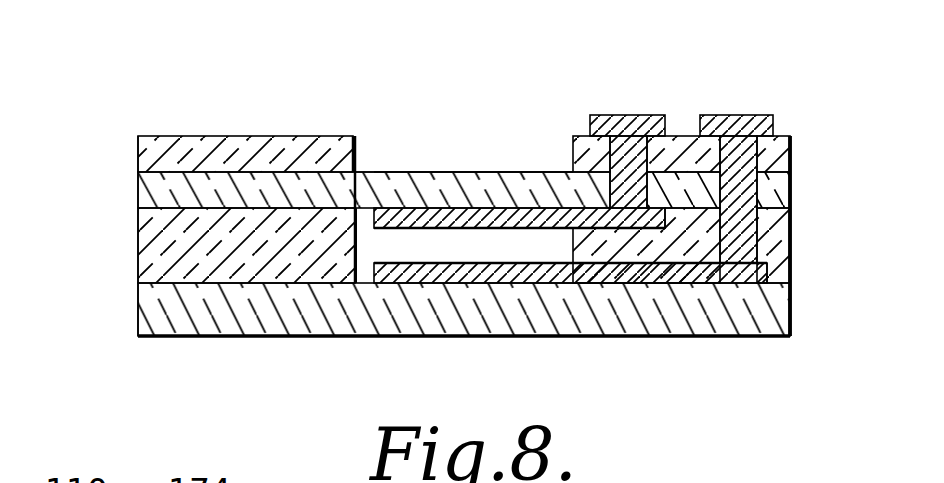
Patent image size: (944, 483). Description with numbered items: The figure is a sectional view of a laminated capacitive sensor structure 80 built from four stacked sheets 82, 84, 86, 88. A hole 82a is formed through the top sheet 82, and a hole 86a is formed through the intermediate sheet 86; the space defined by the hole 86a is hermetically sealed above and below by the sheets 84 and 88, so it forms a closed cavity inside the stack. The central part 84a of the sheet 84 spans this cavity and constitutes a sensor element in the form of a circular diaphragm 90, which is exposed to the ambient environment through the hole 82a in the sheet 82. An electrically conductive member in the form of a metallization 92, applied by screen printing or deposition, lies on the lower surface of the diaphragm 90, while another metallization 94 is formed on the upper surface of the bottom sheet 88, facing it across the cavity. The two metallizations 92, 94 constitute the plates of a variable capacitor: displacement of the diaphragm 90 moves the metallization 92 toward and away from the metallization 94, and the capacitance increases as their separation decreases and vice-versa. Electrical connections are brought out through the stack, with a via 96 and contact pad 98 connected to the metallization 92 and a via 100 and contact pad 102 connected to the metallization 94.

The structure 80 is at (133, 112).
The sheet 82 is at (138, 157).
The hole 82a is at (360, 146).
The sheet 84 is at (138, 187).
The central part 84a is at (394, 163).
The sheet 86 is at (138, 262).
The hole 86a is at (358, 246).
The sheet 88 is at (138, 316).
The circular diaphragm 90 is at (490, 172).
The metallization 92 is at (425, 212).
The metallization 94 is at (474, 275).
The via 96 is at (580, 157).
The contact pad 98 is at (630, 115).
The via 100 is at (792, 180).
The contact pad 102 is at (717, 113).